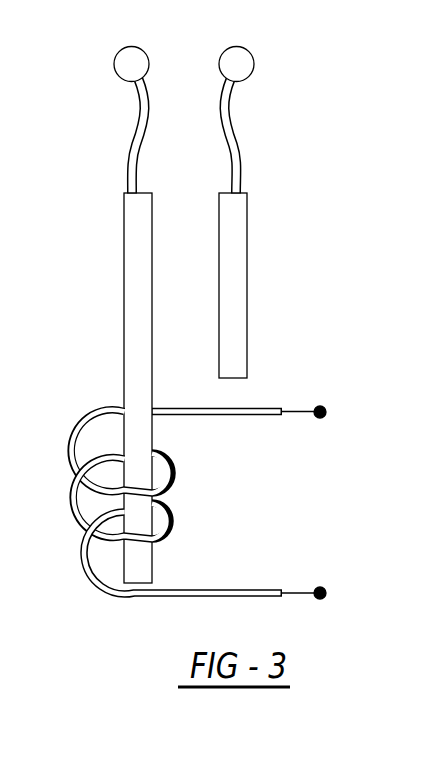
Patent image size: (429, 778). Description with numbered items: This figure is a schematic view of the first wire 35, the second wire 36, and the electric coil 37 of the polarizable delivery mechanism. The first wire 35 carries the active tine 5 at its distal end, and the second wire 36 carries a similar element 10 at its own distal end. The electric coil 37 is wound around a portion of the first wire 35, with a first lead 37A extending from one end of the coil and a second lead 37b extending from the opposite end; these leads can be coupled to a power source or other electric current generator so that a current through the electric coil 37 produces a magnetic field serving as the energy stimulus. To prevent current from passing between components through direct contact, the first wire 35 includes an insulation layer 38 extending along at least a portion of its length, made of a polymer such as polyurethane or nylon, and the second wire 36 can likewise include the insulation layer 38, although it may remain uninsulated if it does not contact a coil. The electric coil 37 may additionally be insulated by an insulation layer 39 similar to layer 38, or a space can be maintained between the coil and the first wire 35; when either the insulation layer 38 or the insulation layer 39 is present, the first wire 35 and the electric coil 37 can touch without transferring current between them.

The active tine 5 is at (147, 97).
The second electrode 10 is at (233, 118).
The first wire 35 is at (87, 157).
The second wire 36 is at (288, 135).
The electric coil 37 is at (216, 505).
The first lead 37A is at (340, 432).
The second lead 37b is at (333, 609).
The insulation layer 38 is at (124, 300).
The insulation layer 39 is at (253, 408).